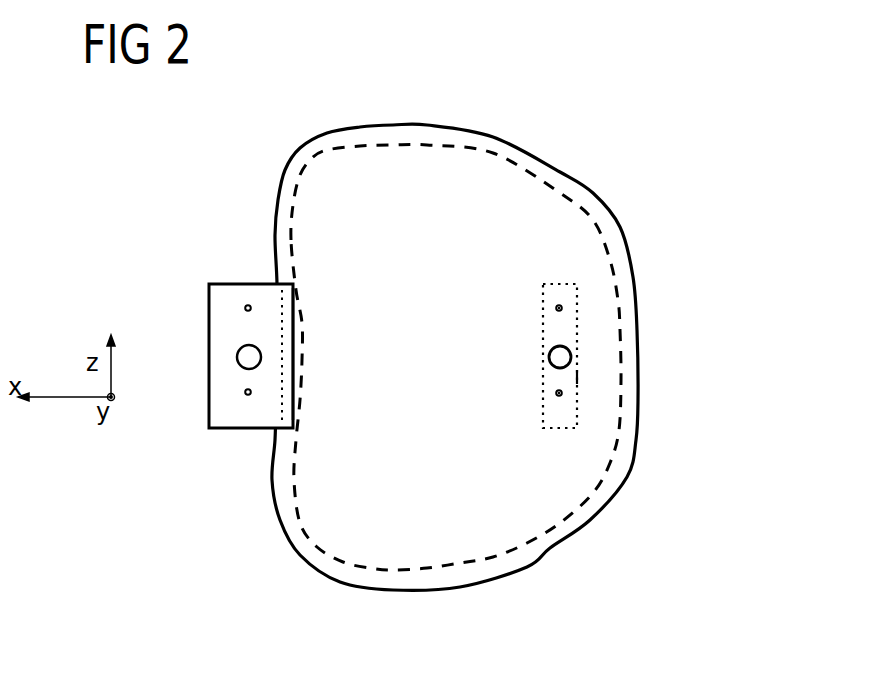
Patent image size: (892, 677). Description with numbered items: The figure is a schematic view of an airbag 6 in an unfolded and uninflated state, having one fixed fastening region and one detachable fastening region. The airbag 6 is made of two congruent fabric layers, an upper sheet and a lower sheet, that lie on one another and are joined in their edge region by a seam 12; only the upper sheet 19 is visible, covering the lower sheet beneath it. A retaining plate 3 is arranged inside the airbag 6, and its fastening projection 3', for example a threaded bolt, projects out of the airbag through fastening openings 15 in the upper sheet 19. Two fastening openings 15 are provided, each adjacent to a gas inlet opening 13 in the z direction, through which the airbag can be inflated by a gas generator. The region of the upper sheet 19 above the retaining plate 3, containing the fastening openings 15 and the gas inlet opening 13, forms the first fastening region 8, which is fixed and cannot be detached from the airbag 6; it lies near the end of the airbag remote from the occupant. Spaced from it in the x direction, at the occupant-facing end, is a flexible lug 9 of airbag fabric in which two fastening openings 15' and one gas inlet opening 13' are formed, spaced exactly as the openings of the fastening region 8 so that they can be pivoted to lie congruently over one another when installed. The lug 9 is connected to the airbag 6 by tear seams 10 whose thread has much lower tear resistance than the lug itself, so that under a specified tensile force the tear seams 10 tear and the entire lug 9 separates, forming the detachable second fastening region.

The retaining plate 3 is at (652, 404).
The fastening projection 3' is at (501, 379).
The airbag 6 is at (575, 180).
The first fastening region 8 is at (560, 325).
The flexible lug 9 is at (210, 284).
The tear seams 10 is at (294, 382).
The seam 12 is at (615, 272).
The gas inlet opening 13 is at (618, 338).
The gas inlet opening 13' is at (204, 386).
The fastening openings 15 is at (617, 370).
The fastening openings 15' is at (213, 419).
The upper sheet 19 is at (457, 198).